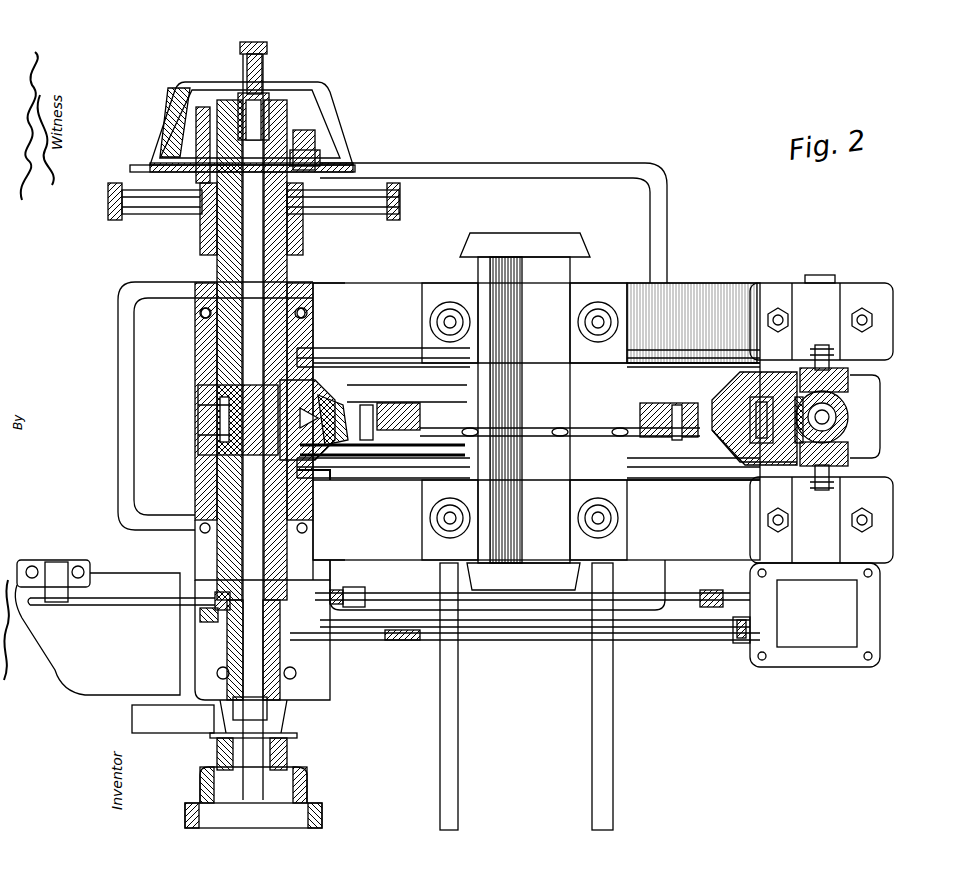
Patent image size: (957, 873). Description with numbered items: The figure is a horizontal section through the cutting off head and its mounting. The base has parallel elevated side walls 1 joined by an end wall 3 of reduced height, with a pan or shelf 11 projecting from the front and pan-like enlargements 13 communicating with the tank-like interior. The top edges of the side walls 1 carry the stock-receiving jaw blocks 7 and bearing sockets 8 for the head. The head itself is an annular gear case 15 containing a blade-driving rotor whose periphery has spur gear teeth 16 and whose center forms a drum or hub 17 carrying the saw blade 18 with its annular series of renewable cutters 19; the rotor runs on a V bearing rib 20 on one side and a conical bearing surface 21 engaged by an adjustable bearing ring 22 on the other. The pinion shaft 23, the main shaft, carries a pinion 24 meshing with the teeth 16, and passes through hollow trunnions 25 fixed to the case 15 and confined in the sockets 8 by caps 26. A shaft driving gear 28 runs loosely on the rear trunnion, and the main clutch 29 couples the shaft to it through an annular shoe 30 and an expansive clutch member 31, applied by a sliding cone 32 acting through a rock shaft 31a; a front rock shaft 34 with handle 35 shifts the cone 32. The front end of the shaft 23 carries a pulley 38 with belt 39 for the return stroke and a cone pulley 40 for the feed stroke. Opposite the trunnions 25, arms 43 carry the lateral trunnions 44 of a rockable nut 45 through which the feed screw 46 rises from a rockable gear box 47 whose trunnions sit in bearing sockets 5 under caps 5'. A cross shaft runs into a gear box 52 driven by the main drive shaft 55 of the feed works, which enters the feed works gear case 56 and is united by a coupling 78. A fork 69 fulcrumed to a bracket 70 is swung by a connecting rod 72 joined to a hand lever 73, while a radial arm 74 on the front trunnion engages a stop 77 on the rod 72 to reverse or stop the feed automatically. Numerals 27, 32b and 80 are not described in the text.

The side walls 1 is at (385, 290).
The end wall 3 is at (693, 410).
The bearing sockets 5 is at (821, 317).
The caps 5' is at (821, 520).
The stock-receiving jaw blocks 7 is at (525, 411).
The bearing sockets 8 is at (336, 502).
The pan or shelf 11 is at (548, 612).
The pan-like enlargements 13 is at (683, 247).
The gear case 15 is at (336, 402).
The spur gear teeth 16 is at (302, 398).
The drum or hub 17 is at (676, 418).
The saw blade 18 is at (410, 440).
The renewable cutters 19 is at (510, 430).
The V bearing rib 20 is at (740, 460).
The conical bearing surface 21 is at (720, 455).
The bearing ring 22 is at (310, 395).
The pinion shaft 23 is at (250, 300).
The pinion 24 is at (226, 438).
The trunnions 25 is at (220, 360).
The caps 26 is at (198, 308).
The bracket 27 is at (320, 468).
The shaft driving gear 28 is at (108, 204).
The main clutch 29 is at (251, 127).
The annular shoe or flange 30 is at (150, 173).
The expansive clutch member 31 is at (160, 158).
The rock shaft 31a is at (162, 112).
The sliding cone 32 is at (268, 102).
The stud 32b is at (225, 128).
The rock shaft 34 is at (660, 642).
The handle 35 is at (742, 645).
The pulley 38 is at (285, 722).
The belt 39 is at (180, 727).
The cone pulley 40 is at (322, 808).
The radially projecting arms 43 is at (850, 384).
The lateral trunnions 44 is at (822, 360).
The rockable nut 45 is at (848, 416).
The feed screw 46 is at (805, 440).
The gear box 47 is at (880, 456).
The gear box 52 is at (815, 615).
The main drive shaft 55 is at (588, 630).
The feed works gear case 56 is at (97, 634).
The fork 69 is at (72, 597).
The bracket 70 is at (62, 580).
The connecting rod 72 is at (170, 606).
The hand lever 73 is at (726, 598).
The radial arm 74 is at (215, 610).
The stop 77 is at (352, 588).
The coupling 78 is at (395, 642).
The leg 80 is at (460, 722).